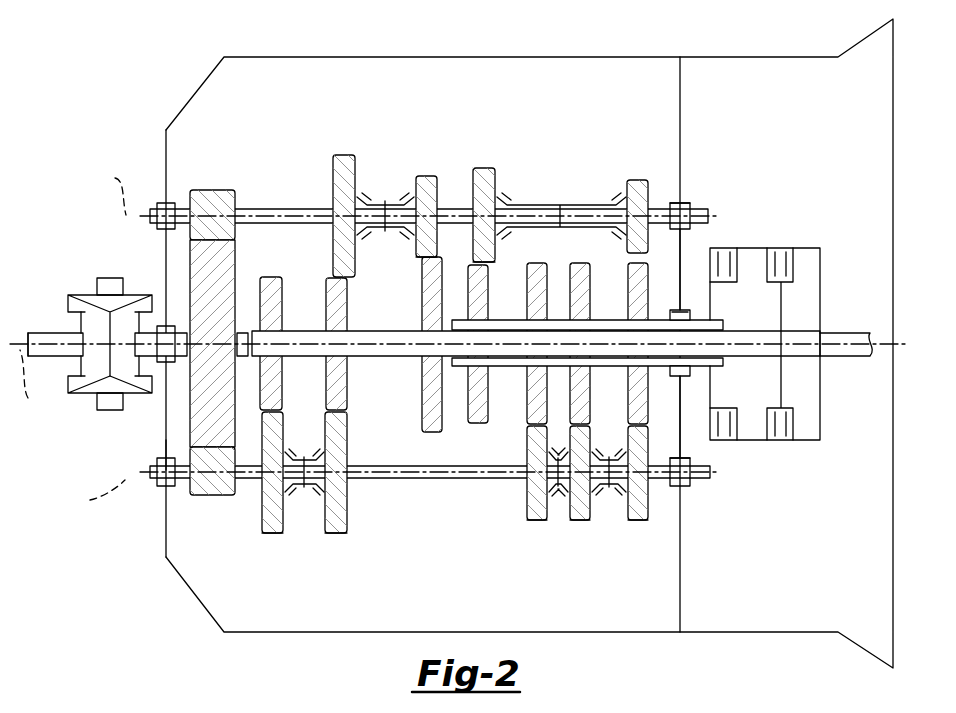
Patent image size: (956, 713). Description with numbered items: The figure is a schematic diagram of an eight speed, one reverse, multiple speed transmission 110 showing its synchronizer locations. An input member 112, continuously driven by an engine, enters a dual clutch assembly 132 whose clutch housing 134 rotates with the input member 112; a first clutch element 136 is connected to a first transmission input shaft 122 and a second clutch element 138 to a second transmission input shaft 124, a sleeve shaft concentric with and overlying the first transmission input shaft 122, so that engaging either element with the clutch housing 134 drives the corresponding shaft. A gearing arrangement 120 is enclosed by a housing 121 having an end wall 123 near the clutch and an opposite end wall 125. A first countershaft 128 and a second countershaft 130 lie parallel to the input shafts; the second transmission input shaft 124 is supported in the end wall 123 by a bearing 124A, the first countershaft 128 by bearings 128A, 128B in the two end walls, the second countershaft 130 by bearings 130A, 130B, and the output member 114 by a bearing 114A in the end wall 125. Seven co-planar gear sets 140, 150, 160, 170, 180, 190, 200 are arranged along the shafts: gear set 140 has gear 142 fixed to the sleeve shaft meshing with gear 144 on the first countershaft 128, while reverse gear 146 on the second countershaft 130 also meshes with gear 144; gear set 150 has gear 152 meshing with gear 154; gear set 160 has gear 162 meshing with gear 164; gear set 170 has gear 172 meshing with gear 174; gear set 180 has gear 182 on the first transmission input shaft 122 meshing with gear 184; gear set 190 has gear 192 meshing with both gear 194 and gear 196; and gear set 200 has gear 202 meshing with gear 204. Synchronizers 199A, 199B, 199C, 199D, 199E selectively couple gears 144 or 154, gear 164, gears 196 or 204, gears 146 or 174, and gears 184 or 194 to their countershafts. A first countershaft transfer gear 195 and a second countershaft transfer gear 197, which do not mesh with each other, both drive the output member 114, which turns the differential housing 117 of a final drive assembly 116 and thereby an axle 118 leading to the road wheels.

The multiple speed transmission 110 is at (122, 75).
The input member 112 is at (842, 334).
The output member 114 is at (168, 453).
The bearing 114A is at (163, 362).
The final drive assembly 116 is at (95, 467).
The differential housing 117 is at (108, 278).
The axle 118 is at (48, 333).
The gearing arrangement 120 is at (557, 113).
The housing 121 is at (478, 57).
The first transmission input shaft 122 is at (738, 358).
The end wall 123 is at (680, 85).
The second transmission input shaft 124 is at (605, 320).
The bearing 124A is at (683, 312).
The end wall 125 is at (166, 155).
The first countershaft 128 is at (690, 486).
The bearing 128A is at (690, 462).
The bearing 128B is at (160, 487).
The second countershaft 130 is at (690, 210).
The bearing 130A is at (682, 205).
The bearing 130B is at (157, 226).
The dual clutch assembly 132 is at (794, 308).
The clutch housing 134 is at (820, 258).
The first clutch element 136 is at (781, 296).
The second clutch element 138 is at (711, 302).
The co-planar gear set 140 is at (642, 530).
The gear 142 is at (648, 282).
The gear 144 is at (650, 510).
The gear 146 is at (648, 188).
The co-planar gear set 150 is at (580, 530).
The gear 152 is at (578, 264).
The gear 154 is at (570, 510).
The co-planar gear set 160 is at (535, 530).
The gear 162 is at (540, 248).
The gear 164 is at (527, 510).
The co-planar gear set 170 is at (483, 160).
The gear 172 is at (478, 424).
The gear 174 is at (497, 190).
The co-planar gear set 180 is at (425, 168).
The gear 182 is at (422, 400).
The gear 184 is at (416, 185).
The co-planar gear set 190 is at (337, 542).
The gear 192 is at (347, 298).
The gear 194 is at (333, 165).
The first countershaft transfer gear 195 is at (212, 498).
The gear 196 is at (347, 505).
The second countershaft transfer gear 197 is at (210, 190).
The synchronizer assembly 199A is at (609, 492).
The synchronizer assembly 199B is at (512, 490).
The synchronizer assembly 199C is at (304, 492).
The synchronizer assembly 199D is at (583, 204).
The synchronizer assembly 199E is at (385, 232).
The co-planar gear set 200 is at (271, 542).
The gear 202 is at (283, 284).
The gear 204 is at (262, 512).